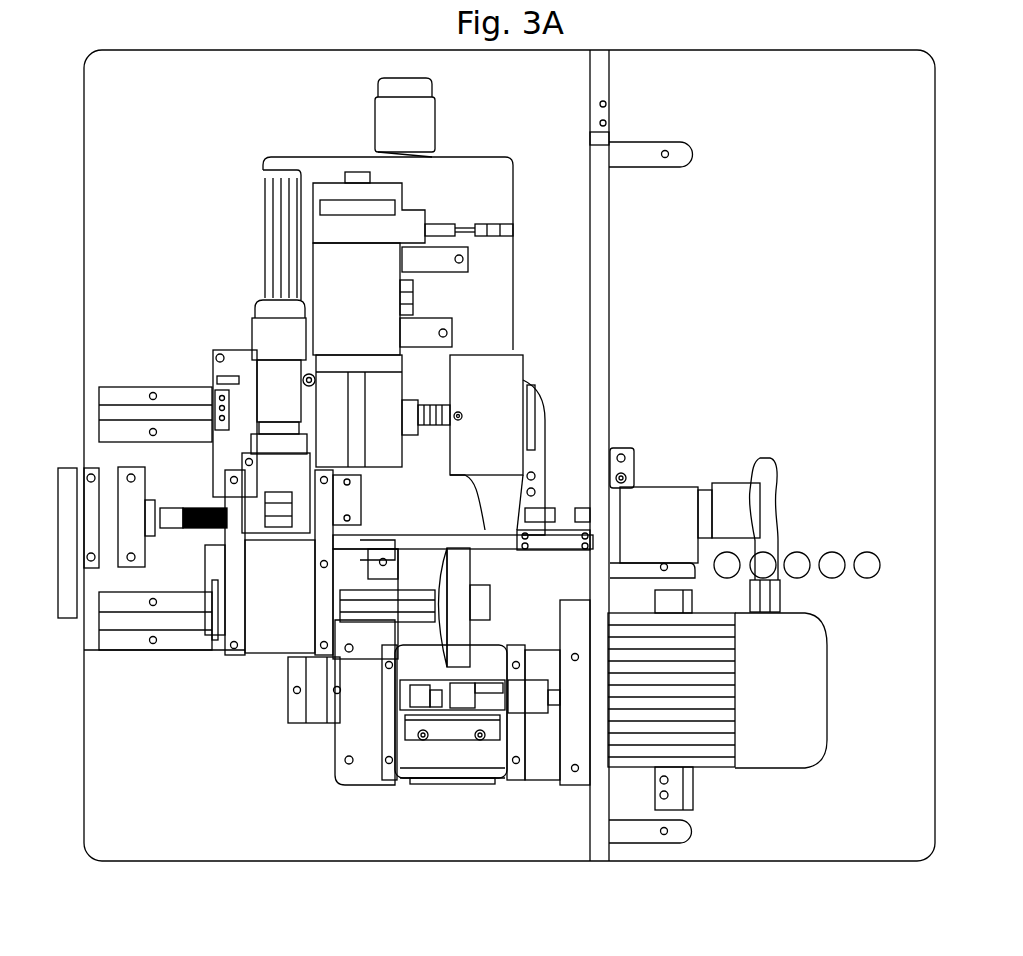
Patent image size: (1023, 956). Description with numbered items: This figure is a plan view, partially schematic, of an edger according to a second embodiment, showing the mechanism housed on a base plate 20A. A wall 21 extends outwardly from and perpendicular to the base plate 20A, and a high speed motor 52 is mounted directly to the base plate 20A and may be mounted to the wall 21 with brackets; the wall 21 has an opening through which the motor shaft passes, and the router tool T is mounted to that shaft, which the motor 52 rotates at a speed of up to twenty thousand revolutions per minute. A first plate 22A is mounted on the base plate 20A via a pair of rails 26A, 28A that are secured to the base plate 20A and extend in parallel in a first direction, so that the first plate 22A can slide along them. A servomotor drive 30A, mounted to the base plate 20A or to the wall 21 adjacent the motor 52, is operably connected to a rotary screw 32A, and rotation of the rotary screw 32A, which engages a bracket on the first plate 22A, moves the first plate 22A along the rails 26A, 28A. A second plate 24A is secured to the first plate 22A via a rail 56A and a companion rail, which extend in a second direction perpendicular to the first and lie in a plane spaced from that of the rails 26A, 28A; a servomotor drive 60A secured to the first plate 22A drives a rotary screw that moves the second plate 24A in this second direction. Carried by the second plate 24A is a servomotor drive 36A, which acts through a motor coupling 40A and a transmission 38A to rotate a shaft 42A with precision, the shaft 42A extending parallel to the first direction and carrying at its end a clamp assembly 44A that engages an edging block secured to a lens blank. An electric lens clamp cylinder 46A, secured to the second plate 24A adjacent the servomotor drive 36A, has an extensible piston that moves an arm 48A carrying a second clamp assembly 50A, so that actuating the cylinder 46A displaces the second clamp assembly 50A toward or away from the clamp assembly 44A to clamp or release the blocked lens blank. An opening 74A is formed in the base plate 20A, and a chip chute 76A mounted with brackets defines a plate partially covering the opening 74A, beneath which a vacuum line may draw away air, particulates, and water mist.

The base plate 20A is at (907, 155).
The wall 21 is at (600, 288).
The first plate 22A is at (475, 167).
The second plate 24A is at (540, 438).
The rail 26A is at (106, 620).
The rail 28A is at (115, 414).
The servomotor drive 30A is at (712, 470).
The rotary screw 32A is at (200, 530).
The servomotor drive 36A is at (240, 300).
The transmission 38A is at (258, 640).
The motor coupling 40A is at (268, 497).
The shaft 42A is at (338, 598).
The clamp assembly 44A is at (408, 603).
The electric lens clamp cylinder 46A is at (415, 392).
The arm 48A is at (575, 480).
The second clamp assembly 50A is at (477, 620).
The high speed motor 52 is at (806, 681).
The rail 56A is at (298, 712).
The servomotor drive 60A is at (365, 125).
The opening 74A is at (450, 748).
The chip chute 76A is at (430, 742).
The router tool T is at (558, 700).